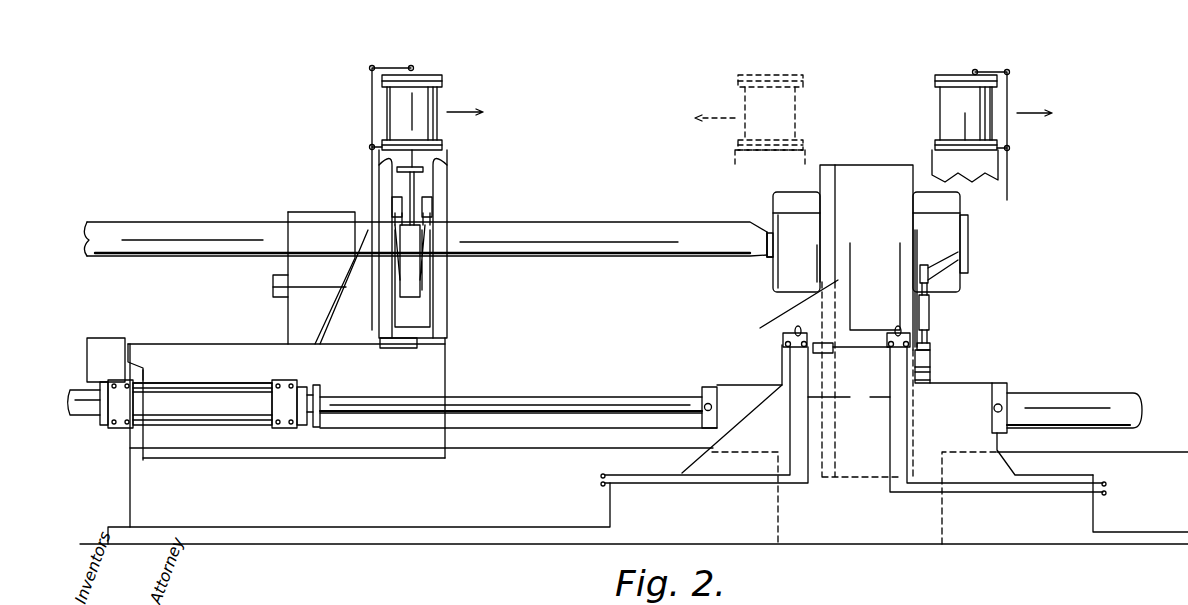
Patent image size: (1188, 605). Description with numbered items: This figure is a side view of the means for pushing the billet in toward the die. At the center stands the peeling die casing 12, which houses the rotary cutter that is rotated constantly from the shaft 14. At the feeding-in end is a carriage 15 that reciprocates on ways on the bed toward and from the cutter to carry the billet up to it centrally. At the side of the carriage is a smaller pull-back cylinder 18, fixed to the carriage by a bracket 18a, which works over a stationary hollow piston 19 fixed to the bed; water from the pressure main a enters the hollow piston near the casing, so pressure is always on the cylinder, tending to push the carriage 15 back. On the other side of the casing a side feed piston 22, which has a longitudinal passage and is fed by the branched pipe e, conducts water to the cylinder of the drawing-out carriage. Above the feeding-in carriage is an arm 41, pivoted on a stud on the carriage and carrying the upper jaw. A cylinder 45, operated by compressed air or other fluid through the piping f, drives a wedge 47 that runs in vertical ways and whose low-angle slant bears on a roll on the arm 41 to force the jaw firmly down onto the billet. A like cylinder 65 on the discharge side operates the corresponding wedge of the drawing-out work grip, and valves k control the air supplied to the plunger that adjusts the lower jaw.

The peeling die casing 12 is at (872, 208).
The shaft 14 is at (607, 228).
The carriage 15 is at (637, 441).
The pull-back cylinder 18 is at (207, 408).
The bracket 18a is at (247, 372).
The hollow piston 19 is at (551, 398).
The side feed piston 22 is at (1065, 400).
The arm 41 is at (405, 280).
The cylinder 45 is at (440, 97).
The wedge 47 is at (407, 214).
The cylinder 65 is at (955, 108).
The pressure main a is at (708, 403).
The pipe e is at (1000, 404).
The piping f is at (390, 67).
The valve k is at (790, 326).